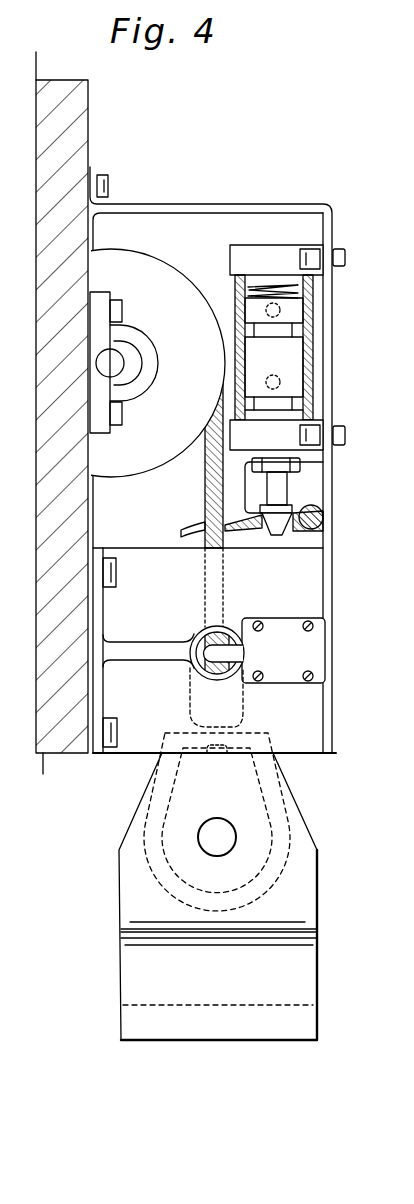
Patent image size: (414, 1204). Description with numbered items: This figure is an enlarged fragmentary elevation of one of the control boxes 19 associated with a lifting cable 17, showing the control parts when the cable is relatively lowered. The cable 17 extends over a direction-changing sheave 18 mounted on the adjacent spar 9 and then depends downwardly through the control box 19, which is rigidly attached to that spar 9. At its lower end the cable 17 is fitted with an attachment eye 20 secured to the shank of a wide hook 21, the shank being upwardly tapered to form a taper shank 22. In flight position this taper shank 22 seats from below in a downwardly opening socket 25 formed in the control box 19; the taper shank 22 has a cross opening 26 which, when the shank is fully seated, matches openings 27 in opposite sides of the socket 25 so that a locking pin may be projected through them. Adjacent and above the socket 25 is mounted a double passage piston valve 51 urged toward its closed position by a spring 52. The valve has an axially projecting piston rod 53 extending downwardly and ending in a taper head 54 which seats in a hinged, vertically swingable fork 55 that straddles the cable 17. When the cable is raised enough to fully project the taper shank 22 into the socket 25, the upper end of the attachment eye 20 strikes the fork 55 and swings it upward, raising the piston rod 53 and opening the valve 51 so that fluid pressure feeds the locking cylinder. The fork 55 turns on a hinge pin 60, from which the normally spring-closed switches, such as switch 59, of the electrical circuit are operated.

The spar 9 is at (64, 148).
The control box 19 is at (171, 202).
The direction-changing sheave 18 is at (163, 287).
The cable 17 is at (203, 457).
The double passage piston valve 51 is at (311, 331).
The spring 52 is at (263, 288).
The piston rod 53 is at (280, 492).
The taper head 54 is at (275, 526).
The fork 55 is at (233, 520).
The hinge pin 60 is at (324, 516).
The socket 25 is at (311, 585).
The switch 59 is at (218, 650).
The opening 27 is at (188, 659).
The taper shank 22 is at (297, 797).
The attachment eye 20 is at (297, 905).
The hook 21 is at (305, 1020).
The cross opening 26 is at (217, 835).